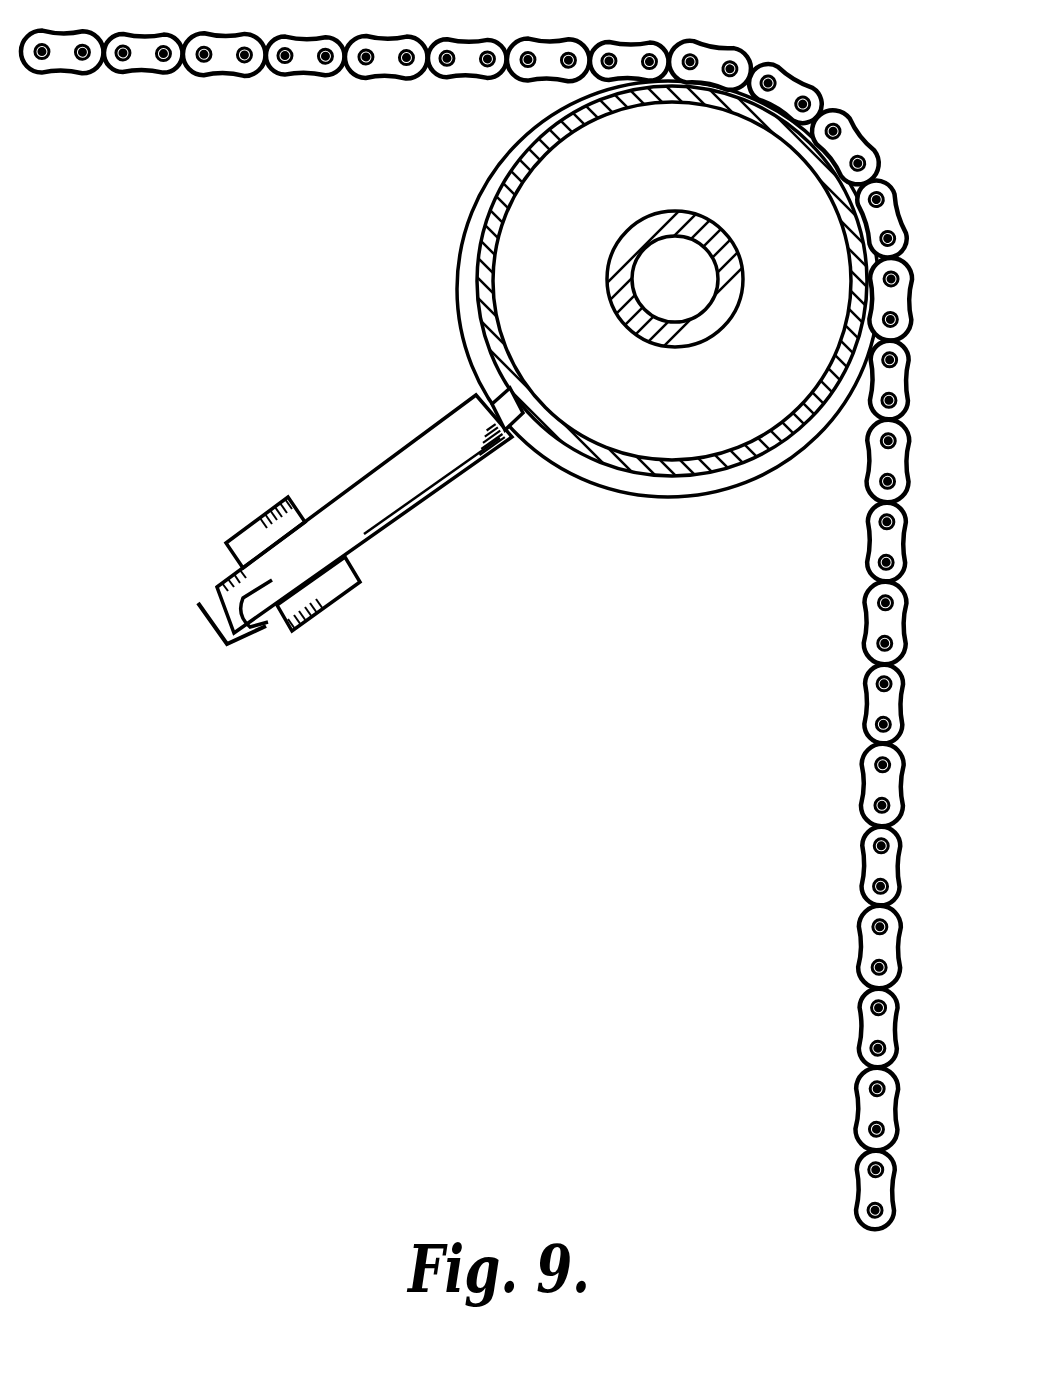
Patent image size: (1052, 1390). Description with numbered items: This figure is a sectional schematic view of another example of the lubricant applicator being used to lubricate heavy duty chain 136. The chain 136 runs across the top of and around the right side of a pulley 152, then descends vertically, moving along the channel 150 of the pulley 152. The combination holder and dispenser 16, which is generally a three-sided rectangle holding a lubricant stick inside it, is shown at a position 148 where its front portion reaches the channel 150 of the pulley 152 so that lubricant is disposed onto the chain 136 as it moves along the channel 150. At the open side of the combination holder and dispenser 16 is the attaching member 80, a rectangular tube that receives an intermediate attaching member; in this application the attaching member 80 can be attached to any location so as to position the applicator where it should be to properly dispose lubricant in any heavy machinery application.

The combination holder and dispenser 16 is at (427, 502).
The attaching member 80 is at (320, 622).
The heavy duty chain 136 is at (222, 77).
The position 148 is at (522, 420).
The channel 150 is at (495, 392).
The pulley 152 is at (621, 492).